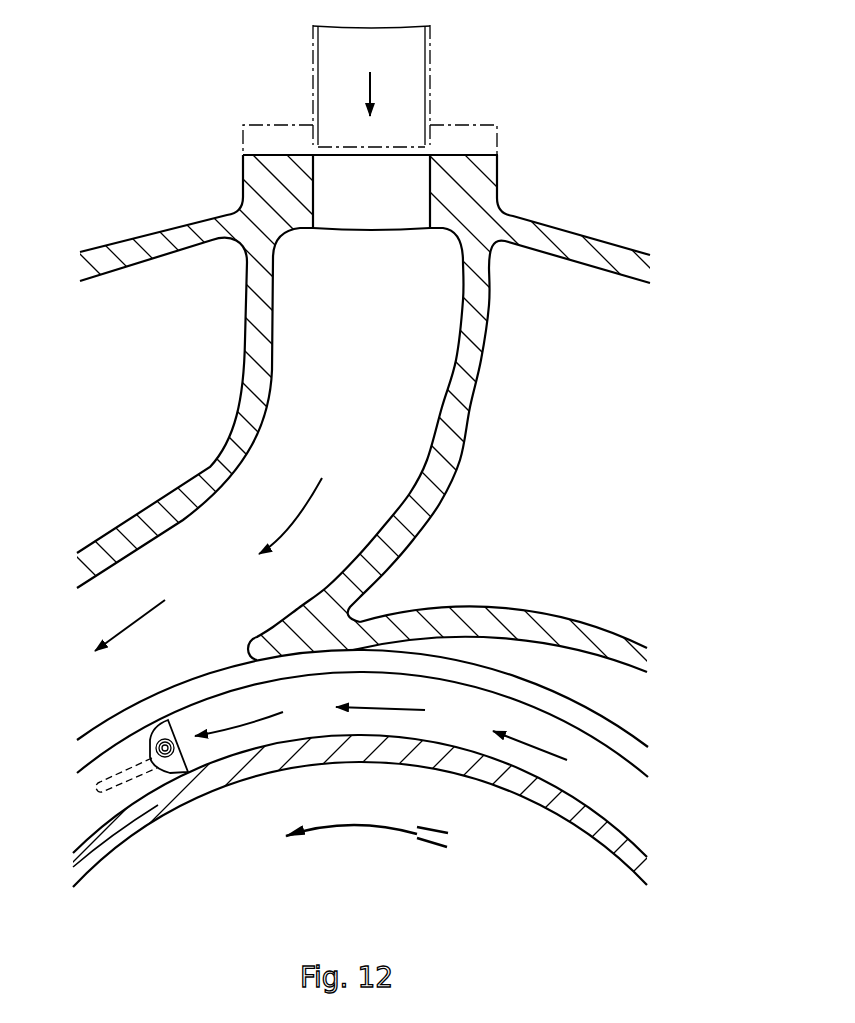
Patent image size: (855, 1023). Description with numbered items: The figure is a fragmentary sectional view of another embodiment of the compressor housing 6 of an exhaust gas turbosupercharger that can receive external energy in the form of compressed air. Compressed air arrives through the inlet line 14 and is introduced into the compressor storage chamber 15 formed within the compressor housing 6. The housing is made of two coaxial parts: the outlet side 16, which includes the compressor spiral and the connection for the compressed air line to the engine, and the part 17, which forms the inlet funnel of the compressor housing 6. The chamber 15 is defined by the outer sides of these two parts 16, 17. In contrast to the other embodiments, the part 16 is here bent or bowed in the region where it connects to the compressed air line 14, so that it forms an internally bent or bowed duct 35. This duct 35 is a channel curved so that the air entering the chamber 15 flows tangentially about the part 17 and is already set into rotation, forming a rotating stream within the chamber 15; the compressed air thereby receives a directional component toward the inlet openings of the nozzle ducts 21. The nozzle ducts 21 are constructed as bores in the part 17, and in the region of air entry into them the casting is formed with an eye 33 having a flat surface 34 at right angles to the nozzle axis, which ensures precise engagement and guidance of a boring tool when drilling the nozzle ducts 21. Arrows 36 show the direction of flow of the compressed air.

The compressor housing 6 is at (552, 196).
The inlet line 14 is at (430, 60).
The compressor storage chamber 15 is at (482, 713).
The outlet side 16 is at (607, 237).
The part forming the inlet funnel 17 is at (557, 693).
The injection ducts or nozzles 21 is at (167, 753).
The eye 33 is at (158, 768).
The flat surface 34 is at (162, 730).
The internally bent or bowed duct 35 is at (395, 433).
The arrows 36 is at (292, 520).